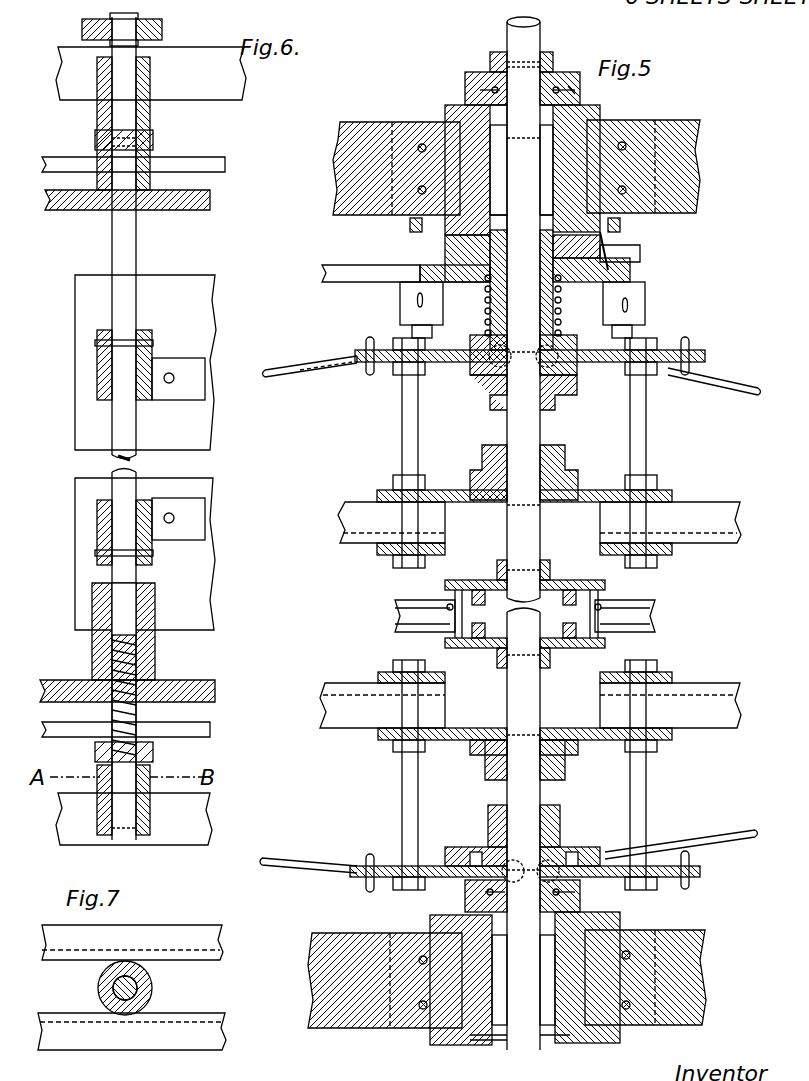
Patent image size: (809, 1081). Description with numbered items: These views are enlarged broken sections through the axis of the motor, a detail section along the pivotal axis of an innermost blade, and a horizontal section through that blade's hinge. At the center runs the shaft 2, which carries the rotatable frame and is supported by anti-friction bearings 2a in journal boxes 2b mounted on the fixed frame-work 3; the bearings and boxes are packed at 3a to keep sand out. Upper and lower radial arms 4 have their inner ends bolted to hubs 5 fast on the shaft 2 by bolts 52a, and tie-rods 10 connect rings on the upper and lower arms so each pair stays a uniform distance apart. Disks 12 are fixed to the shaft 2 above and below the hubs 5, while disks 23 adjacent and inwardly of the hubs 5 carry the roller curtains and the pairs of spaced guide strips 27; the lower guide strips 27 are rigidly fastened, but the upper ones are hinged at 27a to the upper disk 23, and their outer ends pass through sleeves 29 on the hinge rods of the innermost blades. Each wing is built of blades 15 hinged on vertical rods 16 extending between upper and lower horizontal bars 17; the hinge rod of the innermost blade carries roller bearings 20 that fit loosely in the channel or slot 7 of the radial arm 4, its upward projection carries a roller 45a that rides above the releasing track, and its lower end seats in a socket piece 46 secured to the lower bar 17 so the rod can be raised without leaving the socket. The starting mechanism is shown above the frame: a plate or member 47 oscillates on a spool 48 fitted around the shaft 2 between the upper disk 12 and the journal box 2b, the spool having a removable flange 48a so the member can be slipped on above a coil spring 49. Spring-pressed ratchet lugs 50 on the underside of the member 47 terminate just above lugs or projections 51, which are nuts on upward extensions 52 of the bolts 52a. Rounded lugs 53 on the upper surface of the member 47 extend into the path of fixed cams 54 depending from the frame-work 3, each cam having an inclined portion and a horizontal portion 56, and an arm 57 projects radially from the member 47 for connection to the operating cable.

In FIG. 5, the shaft 2 is at (507, 32).
In FIG. 5, the anti-friction bearings 2a is at (470, 88).
In FIG. 5, the journal boxes 2b is at (448, 112).
In FIG. 5, the frame-work 3 is at (700, 148).
In FIG. 5, the packing 3a is at (580, 92).
In FIG. 6, the radial arms 4 is at (226, 818).
In FIG. 7, the radial arms 4 is at (198, 950).
In FIG. 5, the radial arms 4 is at (530, 615).
In FIG. 5, the hubs 5 is at (567, 457).
In FIG. 7, the channel or slot 7 is at (55, 988).
In FIG. 5, the tie-rods 10 is at (366, 370).
In FIG. 5, the disks 12 is at (690, 356).
In FIG. 6, the blades 15 is at (213, 330).
In FIG. 6, the vertical rods 16 is at (138, 472).
In FIG. 6, the horizontal bars 17 is at (210, 203).
In FIG. 6, the roller bearings 20 is at (100, 113).
In FIG. 7, the roller bearings 20 is at (110, 1008).
In FIG. 5, the disks 23 is at (495, 578).
In FIG. 6, the guide strips 27 is at (225, 163).
In FIG. 5, the guide strips 27 is at (395, 610).
In FIG. 5, the hinge 27a is at (447, 605).
In FIG. 6, the sleeves 29 is at (152, 150).
In FIG. 6, the rollers 45a is at (162, 28).
In FIG. 6, the socket pieces 46 is at (100, 618).
In FIG. 5, the plate or member 47 is at (522, 548).
In FIG. 5, the spool 48 is at (562, 296).
In FIG. 5, the removable flange 48a is at (640, 250).
In FIG. 5, the coil spring 49 is at (562, 322).
In FIG. 5, the spring-pressed ratchet lugs 50 is at (420, 335).
In FIG. 5, the lugs or projections 51 is at (656, 345).
In FIG. 5, the upward extensions 52 is at (632, 372).
In FIG. 5, the bolts 52a is at (405, 482).
In FIG. 5, the rounded lugs 53 is at (448, 278).
In FIG. 5, the fixed cams 54 is at (408, 230).
In FIG. 5, the horizontal portion 56 is at (612, 258).
In FIG. 5, the arm 57 is at (338, 285).